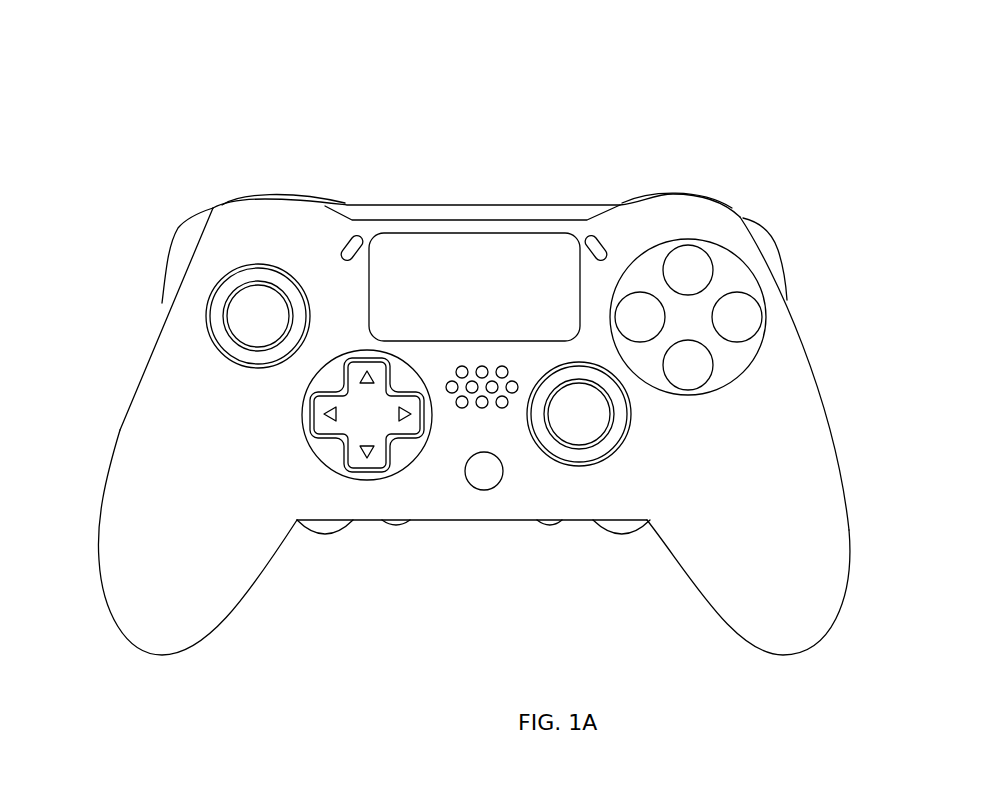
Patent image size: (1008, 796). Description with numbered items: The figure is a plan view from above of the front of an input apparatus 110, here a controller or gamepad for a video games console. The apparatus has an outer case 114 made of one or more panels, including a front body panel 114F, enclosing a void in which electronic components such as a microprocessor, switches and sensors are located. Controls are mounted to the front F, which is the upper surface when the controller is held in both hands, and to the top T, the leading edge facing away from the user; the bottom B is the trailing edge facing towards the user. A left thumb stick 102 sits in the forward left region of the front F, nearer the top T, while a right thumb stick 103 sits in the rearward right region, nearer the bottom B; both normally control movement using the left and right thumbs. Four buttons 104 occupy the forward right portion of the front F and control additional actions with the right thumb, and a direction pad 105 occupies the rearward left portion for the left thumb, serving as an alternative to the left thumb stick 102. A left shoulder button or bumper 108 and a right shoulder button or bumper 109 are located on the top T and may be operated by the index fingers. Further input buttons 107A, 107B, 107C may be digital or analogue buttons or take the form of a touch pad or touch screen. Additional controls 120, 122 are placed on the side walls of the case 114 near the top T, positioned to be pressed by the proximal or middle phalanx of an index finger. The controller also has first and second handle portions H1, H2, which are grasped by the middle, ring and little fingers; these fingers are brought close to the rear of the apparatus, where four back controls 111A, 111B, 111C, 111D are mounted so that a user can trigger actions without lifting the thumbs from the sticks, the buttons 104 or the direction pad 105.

The input apparatus 110 is at (637, 144).
The outer case 114 is at (156, 383).
The front body panel 114F is at (233, 470).
The top T is at (425, 203).
The front F is at (438, 486).
The bottom B is at (478, 522).
The first handle portion H1 is at (802, 600).
The second handle portion H2 is at (188, 601).
The left shoulder button 108 is at (272, 197).
The right shoulder button 109 is at (683, 193).
The additional control 120 is at (180, 252).
The additional control 122 is at (765, 242).
The left thumb stick 102 is at (237, 329).
The right thumb stick 103 is at (558, 427).
The buttons 104 is at (695, 368).
The direction pad 105 is at (391, 427).
The additional input button 107A is at (528, 312).
The additional input button 107B is at (486, 466).
The additional input button 107C is at (350, 240).
The additional control 111A is at (624, 530).
The additional control 111B is at (555, 527).
The additional control 111C is at (393, 527).
The additional control 111D is at (320, 527).